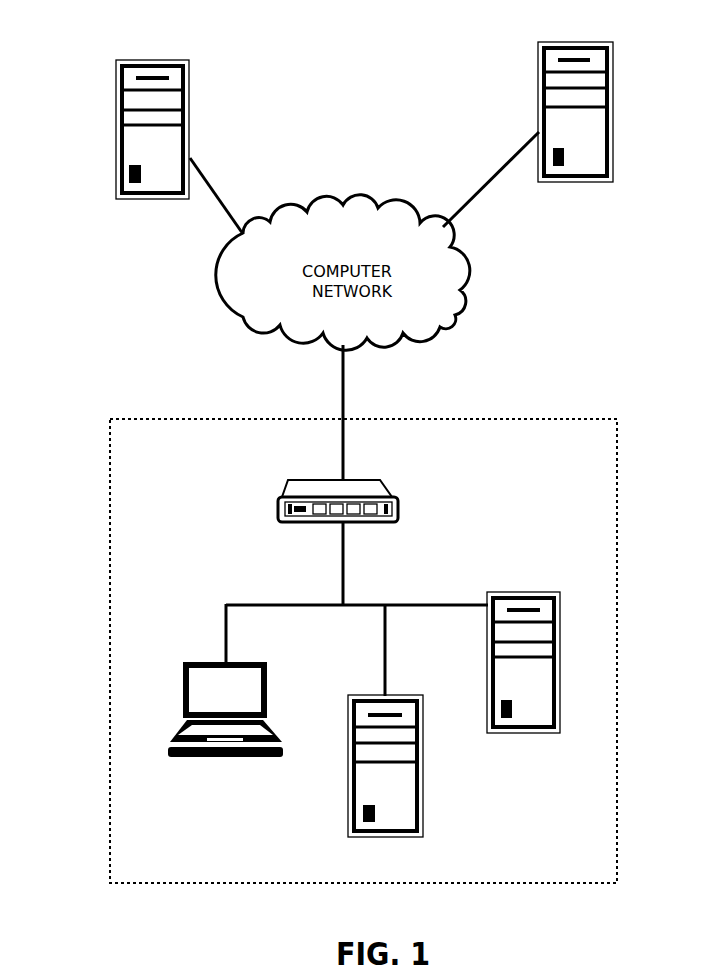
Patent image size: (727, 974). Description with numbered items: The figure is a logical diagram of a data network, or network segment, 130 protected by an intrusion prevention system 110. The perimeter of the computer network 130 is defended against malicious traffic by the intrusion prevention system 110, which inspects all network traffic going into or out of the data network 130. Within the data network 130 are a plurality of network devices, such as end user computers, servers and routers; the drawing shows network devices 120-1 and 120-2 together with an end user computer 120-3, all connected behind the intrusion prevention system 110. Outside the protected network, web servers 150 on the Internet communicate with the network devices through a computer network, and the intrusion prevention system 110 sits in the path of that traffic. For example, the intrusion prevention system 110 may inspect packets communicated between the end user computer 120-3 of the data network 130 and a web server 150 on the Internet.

The web server 150 is at (163, 60).
The data network 130 is at (561, 418).
The intrusion prevention system 110 is at (368, 478).
The network device 120-1 is at (495, 592).
The network device 120-2 is at (423, 766).
The end user computer 120-3 is at (270, 758).